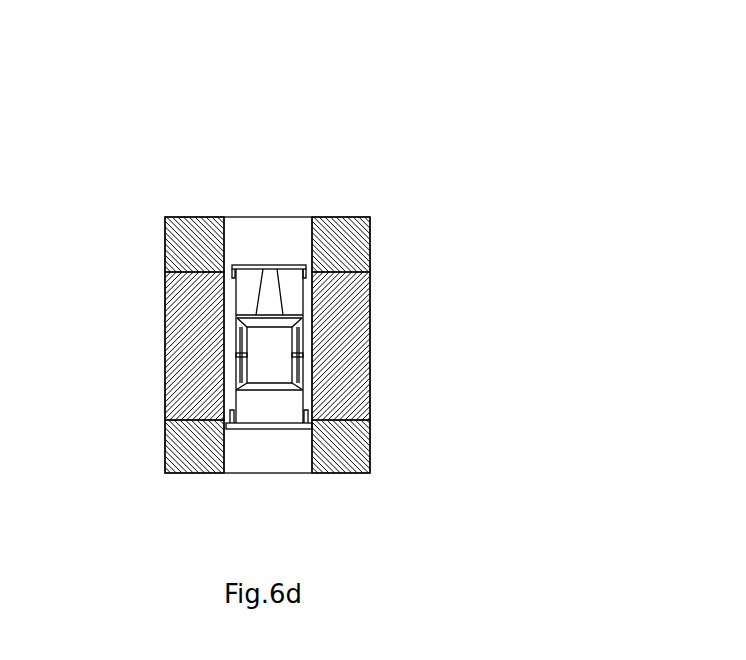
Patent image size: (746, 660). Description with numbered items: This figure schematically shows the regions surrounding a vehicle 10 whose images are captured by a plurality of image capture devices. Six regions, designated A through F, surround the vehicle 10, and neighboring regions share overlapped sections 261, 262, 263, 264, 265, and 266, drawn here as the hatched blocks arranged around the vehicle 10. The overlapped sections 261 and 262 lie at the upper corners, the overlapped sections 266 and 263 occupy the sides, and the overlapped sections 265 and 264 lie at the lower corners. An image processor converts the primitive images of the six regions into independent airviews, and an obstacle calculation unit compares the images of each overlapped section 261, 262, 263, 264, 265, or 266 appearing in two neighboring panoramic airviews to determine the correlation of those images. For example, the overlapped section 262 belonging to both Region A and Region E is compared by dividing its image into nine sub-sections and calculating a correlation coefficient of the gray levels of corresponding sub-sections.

The vehicle 10 is at (284, 262).
The overlapped section 261 is at (166, 224).
The overlapped section 262 is at (343, 260).
The overlapped section 263 is at (356, 340).
The overlapped section 264 is at (355, 450).
The overlapped section 265 is at (205, 445).
The overlapped section 266 is at (182, 376).